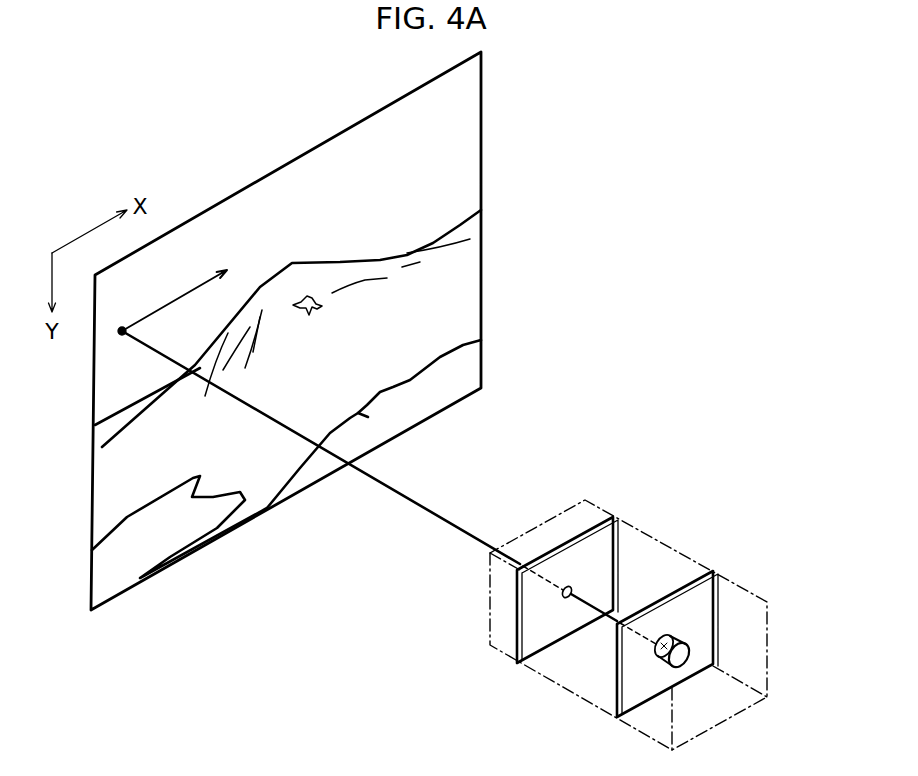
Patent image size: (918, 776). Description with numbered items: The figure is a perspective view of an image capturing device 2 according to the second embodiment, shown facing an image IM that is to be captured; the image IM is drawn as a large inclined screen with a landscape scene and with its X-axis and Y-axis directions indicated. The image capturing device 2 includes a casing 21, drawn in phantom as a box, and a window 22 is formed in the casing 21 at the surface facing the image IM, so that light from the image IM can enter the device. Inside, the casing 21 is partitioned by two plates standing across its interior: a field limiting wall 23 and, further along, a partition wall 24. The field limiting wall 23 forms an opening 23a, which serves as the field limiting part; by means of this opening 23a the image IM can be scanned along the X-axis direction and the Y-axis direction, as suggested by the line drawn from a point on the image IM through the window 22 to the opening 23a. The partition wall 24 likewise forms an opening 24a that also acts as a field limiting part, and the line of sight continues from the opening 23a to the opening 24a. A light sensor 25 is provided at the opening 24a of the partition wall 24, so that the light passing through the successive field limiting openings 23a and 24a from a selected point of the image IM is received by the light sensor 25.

The image IM is at (483, 107).
The image capturing device 2 is at (700, 513).
The casing 21 is at (540, 677).
The window 22 is at (532, 517).
The field limiting wall 23 is at (588, 528).
The opening 23a is at (570, 587).
The partition wall 24 is at (697, 578).
The opening 24a is at (681, 637).
The light sensor 25 is at (686, 666).